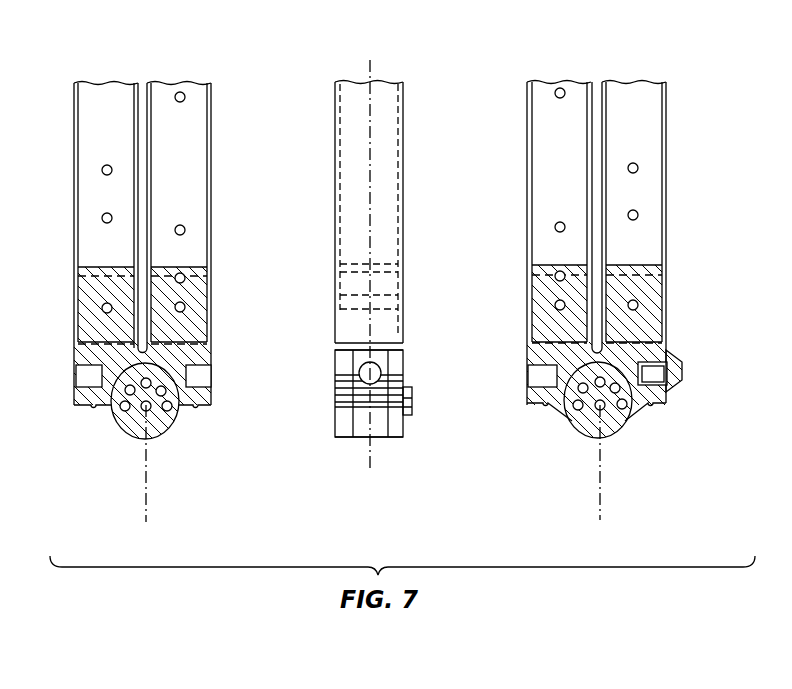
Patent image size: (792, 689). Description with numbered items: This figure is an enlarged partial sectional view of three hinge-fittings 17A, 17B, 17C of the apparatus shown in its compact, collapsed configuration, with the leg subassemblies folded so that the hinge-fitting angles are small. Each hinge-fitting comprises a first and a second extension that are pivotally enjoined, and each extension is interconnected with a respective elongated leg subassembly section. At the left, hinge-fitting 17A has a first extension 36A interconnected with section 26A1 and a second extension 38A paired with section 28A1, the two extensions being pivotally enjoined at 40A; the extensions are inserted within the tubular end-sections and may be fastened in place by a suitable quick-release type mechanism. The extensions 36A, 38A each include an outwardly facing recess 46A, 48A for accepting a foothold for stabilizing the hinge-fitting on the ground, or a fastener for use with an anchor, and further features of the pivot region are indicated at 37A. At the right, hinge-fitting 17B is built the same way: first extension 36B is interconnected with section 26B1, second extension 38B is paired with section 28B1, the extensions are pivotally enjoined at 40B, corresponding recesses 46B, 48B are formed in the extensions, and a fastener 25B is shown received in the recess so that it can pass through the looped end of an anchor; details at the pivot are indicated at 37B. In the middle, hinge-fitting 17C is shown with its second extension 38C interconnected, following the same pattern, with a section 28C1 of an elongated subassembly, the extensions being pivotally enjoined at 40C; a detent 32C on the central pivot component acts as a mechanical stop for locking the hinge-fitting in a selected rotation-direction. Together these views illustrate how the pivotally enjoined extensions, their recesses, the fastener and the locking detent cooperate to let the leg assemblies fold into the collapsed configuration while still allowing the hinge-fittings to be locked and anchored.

The section 26A1 is at (92, 93).
The section 28A1 is at (196, 114).
The first extension 36A is at (82, 308).
The second extension 38A is at (202, 310).
The outwardly facing recess 46A is at (82, 377).
The outwardly facing recess 48A is at (205, 375).
The orifices of assembly A 37A is at (170, 412).
The pivotal joint 40A is at (122, 438).
The hinge-fitting 17A is at (122, 458).
The plate of assembly C 28C1 is at (335, 215).
The second extension 38C is at (350, 327).
The detent 32C is at (412, 398).
The pivotal joint 40C is at (360, 440).
The hinge-fitting 17C is at (402, 452).
The section 28B1 is at (525, 130).
The section 26B1 is at (667, 128).
The second extension 38B is at (547, 295).
The first extension 36B is at (655, 307).
The second slot of assembly B 48B is at (537, 375).
The first slot of assembly B 46B is at (655, 373).
The fastener 25B is at (688, 375).
The orifices of assembly B 37B is at (598, 410).
The pivotal joint 40B is at (632, 428).
The hinge-fitting 17B is at (645, 468).